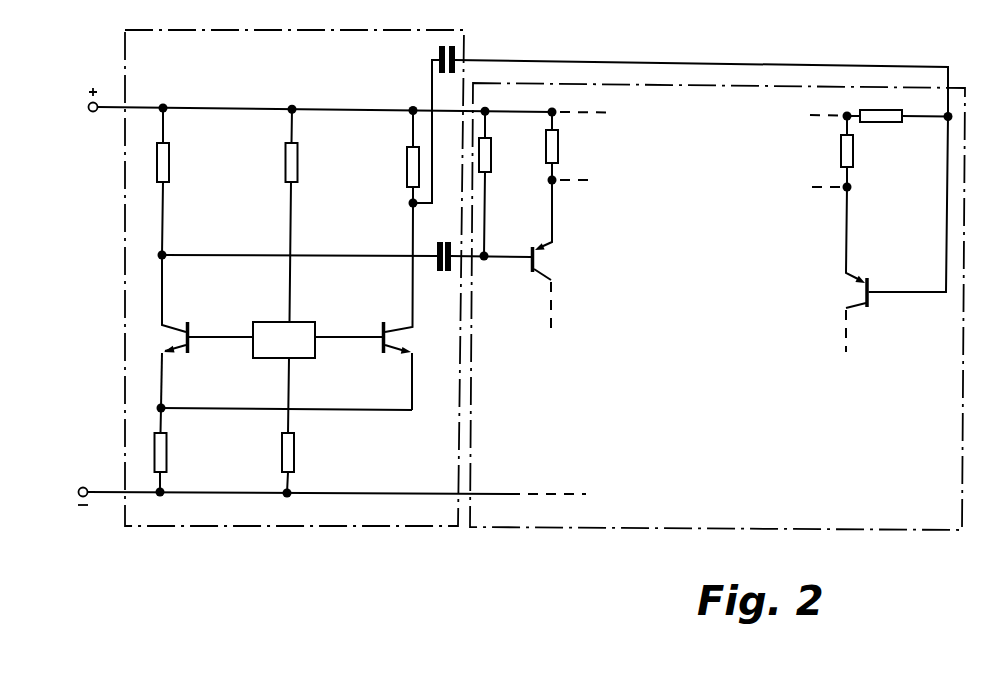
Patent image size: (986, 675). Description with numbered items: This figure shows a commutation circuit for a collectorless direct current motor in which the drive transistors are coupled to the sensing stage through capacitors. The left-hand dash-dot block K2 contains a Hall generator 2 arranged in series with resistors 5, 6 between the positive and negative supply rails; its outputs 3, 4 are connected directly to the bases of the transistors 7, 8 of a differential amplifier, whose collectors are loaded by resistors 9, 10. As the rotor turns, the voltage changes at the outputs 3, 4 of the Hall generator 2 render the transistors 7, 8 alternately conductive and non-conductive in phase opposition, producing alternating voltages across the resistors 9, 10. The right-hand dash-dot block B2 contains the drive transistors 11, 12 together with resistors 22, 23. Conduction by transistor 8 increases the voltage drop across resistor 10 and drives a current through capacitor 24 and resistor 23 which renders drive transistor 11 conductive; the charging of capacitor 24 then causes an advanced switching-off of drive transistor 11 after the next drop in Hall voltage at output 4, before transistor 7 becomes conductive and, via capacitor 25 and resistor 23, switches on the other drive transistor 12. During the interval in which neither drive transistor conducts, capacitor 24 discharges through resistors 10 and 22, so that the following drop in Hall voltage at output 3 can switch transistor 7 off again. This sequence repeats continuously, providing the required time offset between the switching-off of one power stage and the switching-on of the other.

The Hall generator 2 is at (281, 320).
The Hall generator output 3 is at (260, 340).
The Hall generator output 4 is at (306, 340).
The resistor 5 is at (299, 215).
The resistor 6 is at (294, 425).
The transistor 7 is at (207, 331).
The transistor 8 is at (364, 306).
The resistor 9 is at (170, 181).
The resistor 10 is at (400, 157).
The drive transistor 11 is at (897, 235).
The drive transistor 12 is at (537, 258).
The resistor 22 is at (879, 128).
The resistor 23 is at (496, 183).
The capacitor 24 is at (678, 125).
The capacitor 25 is at (444, 271).
The circuit unit K2 is at (312, 30).
The circuit unit B2 is at (727, 88).